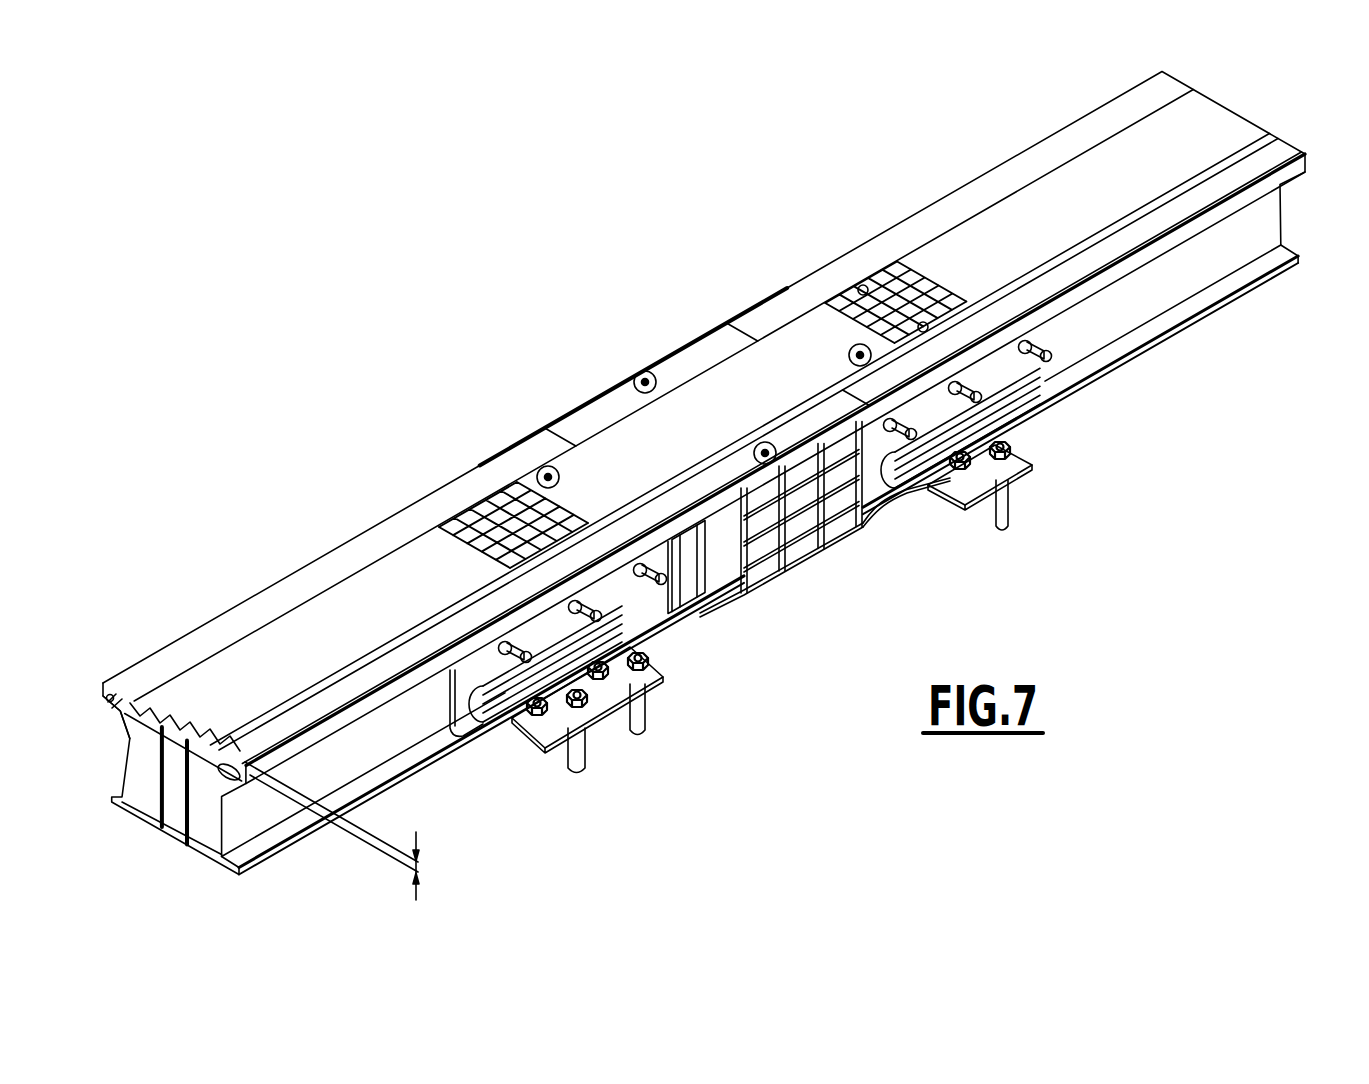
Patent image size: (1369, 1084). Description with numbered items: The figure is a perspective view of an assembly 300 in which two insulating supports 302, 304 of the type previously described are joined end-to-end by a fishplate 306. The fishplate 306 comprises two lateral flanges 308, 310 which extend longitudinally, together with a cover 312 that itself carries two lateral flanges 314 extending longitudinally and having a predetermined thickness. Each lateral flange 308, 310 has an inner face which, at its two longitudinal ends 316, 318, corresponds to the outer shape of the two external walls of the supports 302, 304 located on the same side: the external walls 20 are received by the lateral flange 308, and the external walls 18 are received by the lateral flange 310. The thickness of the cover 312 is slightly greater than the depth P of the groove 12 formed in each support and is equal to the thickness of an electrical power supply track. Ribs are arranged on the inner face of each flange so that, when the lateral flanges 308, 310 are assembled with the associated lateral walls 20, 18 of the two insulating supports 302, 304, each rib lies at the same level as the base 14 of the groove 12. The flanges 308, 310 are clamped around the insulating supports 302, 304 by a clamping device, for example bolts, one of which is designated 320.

The rail assembly 300 is at (686, 499).
The insulating support 302 is at (169, 728).
The insulating support 304 is at (890, 242).
The fishplate 306 is at (806, 590).
The lateral flange 308 is at (722, 590).
The lateral flange 310 is at (612, 380).
The cover 312 is at (695, 408).
The lateral flanges of the cover 314 is at (807, 417).
The longitudinal end 316 is at (468, 708).
The longitudinal end 318 is at (928, 420).
The bolt 320 is at (616, 635).
The groove 12 is at (165, 726).
The base of the groove 14 is at (188, 746).
The external wall 18 is at (127, 764).
The external wall 20 is at (258, 836).